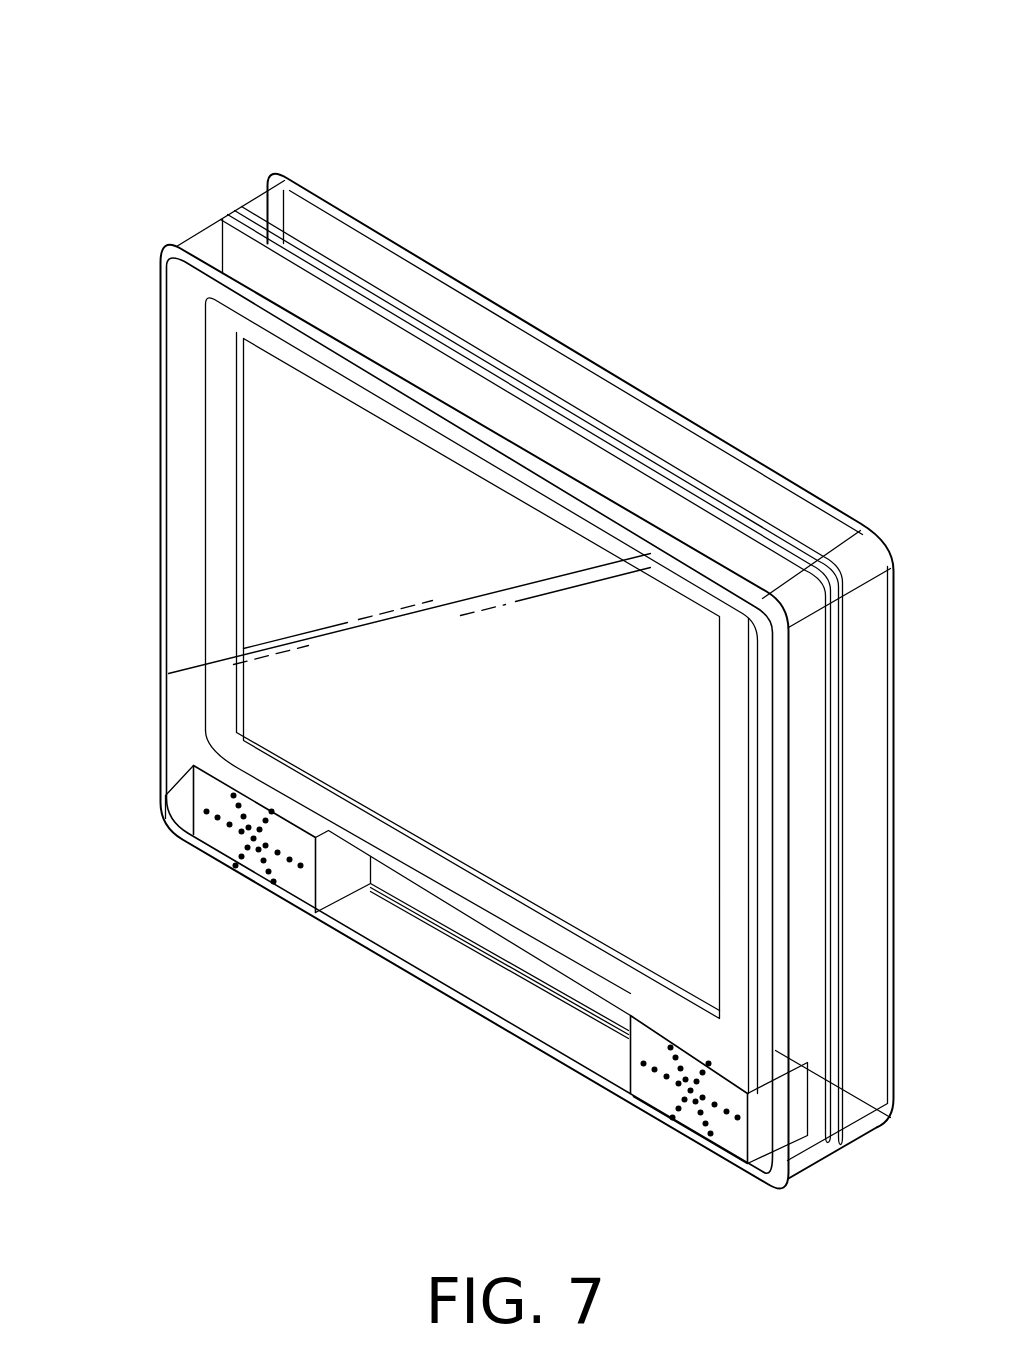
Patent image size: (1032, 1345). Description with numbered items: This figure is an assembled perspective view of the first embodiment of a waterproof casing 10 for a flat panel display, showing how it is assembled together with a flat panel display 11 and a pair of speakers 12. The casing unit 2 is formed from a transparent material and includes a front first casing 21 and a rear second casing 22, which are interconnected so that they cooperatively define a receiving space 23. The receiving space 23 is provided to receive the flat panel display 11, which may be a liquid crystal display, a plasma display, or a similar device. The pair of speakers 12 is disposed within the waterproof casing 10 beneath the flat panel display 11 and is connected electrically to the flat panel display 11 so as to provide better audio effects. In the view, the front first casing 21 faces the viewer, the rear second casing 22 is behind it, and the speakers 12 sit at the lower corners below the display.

The waterproof casing 10 is at (473, 602).
The casing unit 2 is at (505, 667).
The front first casing 21 is at (182, 350).
The rear second casing 22 is at (567, 378).
The receiving space 23 is at (240, 254).
The flat panel display 11 is at (215, 496).
The speakers 12 is at (220, 836).